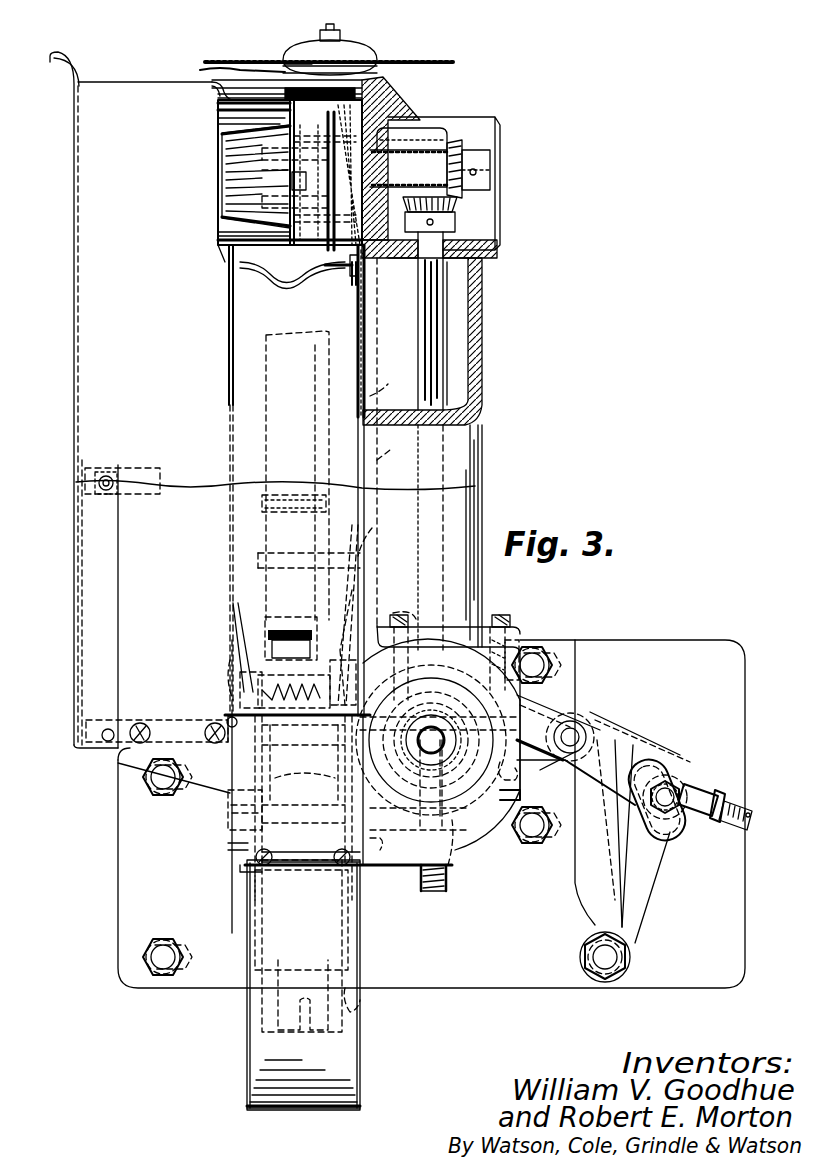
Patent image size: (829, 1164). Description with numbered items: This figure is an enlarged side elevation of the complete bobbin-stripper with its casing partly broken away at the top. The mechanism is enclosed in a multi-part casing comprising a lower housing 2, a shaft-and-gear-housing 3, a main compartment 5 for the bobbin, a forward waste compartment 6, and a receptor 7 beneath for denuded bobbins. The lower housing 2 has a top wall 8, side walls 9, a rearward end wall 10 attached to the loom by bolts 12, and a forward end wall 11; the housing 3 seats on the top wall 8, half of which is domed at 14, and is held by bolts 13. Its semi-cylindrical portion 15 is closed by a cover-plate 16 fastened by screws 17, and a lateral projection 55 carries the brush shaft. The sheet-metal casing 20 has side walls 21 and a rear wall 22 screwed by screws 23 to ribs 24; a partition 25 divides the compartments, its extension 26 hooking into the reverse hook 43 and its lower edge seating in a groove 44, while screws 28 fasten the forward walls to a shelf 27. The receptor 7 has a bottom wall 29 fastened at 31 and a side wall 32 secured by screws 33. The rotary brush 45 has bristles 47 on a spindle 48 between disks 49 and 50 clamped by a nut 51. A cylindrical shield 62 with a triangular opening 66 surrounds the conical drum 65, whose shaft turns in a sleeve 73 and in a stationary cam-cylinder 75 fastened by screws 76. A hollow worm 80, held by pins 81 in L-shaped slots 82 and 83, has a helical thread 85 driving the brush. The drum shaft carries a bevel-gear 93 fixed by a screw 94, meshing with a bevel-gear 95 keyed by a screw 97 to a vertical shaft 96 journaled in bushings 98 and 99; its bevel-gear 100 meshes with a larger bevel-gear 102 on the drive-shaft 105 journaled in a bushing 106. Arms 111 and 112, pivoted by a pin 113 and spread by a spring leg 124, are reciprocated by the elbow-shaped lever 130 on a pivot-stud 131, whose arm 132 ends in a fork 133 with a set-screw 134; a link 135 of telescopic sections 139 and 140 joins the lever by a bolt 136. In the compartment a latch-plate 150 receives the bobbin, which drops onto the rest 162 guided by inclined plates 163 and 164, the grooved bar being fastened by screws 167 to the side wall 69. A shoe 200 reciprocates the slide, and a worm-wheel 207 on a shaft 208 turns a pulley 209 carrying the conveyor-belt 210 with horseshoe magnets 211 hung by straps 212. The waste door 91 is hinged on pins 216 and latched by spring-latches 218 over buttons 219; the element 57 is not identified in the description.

The lower housing 2 is at (412, 866).
The shaft-and-gear-housing 3 is at (494, 446).
The main compartment 5 is at (232, 326).
The outer or forward compartment 6 is at (76, 336).
The receptor 7 is at (375, 1032).
The top wall 8 is at (460, 652).
The side walls 9 is at (228, 806).
The rearward end wall 10 is at (535, 978).
The forward end wall 11 is at (258, 830).
The bolts 12 is at (160, 795).
The bolts 13 is at (396, 606).
The domed portion 14 is at (528, 638).
The semi-cylindrical portion 15 is at (480, 374).
The cover-plate 16 is at (490, 160).
The screws 17 is at (497, 140).
The box-like casing 20 is at (64, 420).
The side walls 21 is at (180, 392).
The rear wall 22 is at (357, 314).
The screws 23 is at (350, 286).
The vertical ribs 24 is at (380, 398).
The vertical partition 25 is at (228, 382).
The extension 26 is at (216, 92).
The bracket-like shelf 27 is at (174, 718).
The screws 28 is at (135, 746).
The bottom wall 29 is at (298, 1110).
The fastening 31 is at (335, 857).
The side wall 32 is at (356, 1010).
The screws 33 is at (232, 848).
The reverse hook 43 is at (365, 86).
The groove 44 is at (226, 710).
The rotary brush 45 is at (410, 54).
The bristles 47 is at (445, 60).
The screw-threaded spindle 48 is at (318, 34).
The concavo-convex disk 49 is at (352, 58).
The concavo-convex disk 50 is at (378, 72).
The nut 51 is at (322, 62).
The lateral projection 55 is at (205, 70).
The wire 57 is at (290, 284).
The cylindrical guard or shield 62 is at (222, 258).
The conical drum or mandrel 65 is at (226, 186).
The triangularly-shaped opening 66 is at (270, 122).
The upright side wall 69 is at (405, 700).
The sleeve 73 is at (412, 160).
The stationary cam-cylinder 75 is at (392, 112).
The screws 76 is at (400, 134).
The hollow worm 80 is at (291, 252).
The pins 81 is at (292, 178).
The L-shaped slot 82 is at (296, 160).
The L-shaped slot 83 is at (292, 198).
The helical thread 85 is at (329, 252).
The cover or door 91 is at (88, 617).
The bevel-gear 93 is at (478, 174).
The screw 94 is at (466, 166).
The bevel-gear 95 is at (460, 206).
The vertical shaft 96 is at (422, 372).
The screw 97 is at (445, 224).
The bushing 98 is at (395, 260).
The bushing 99 is at (412, 608).
The bevel-gear 100 is at (448, 630).
The larger bevel-gear 102 is at (455, 790).
The horizontal drive-shaft 105 is at (413, 758).
The bushing 106 is at (418, 778).
The reciprocated arm 111 is at (538, 712).
The reciprocated arm 112 is at (548, 772).
The pivot-pin 113 is at (566, 737).
The straight leg 124 is at (578, 790).
The elbow-shaped lever 130 is at (640, 888).
The pivot-stud 131 is at (630, 950).
The upper angular arm 132 is at (653, 750).
The fork 133 is at (604, 722).
The set-screw 134 is at (598, 720).
The link 135 is at (738, 785).
The bolt 136 is at (676, 786).
The telescopic screw-threaded section 139 is at (704, 790).
The telescopic screw-threaded section 140 is at (742, 826).
The latch-plate or step 150 is at (300, 616).
The ledge or rest 162 is at (296, 762).
The inclined plate 163 is at (236, 656).
The inclined plate 164 is at (340, 650).
The screws 167 is at (352, 652).
The lenticular-shaped shoe 200 is at (372, 795).
The worm-wheel 207 is at (442, 892).
The shaft 208 is at (455, 865).
The pulley 209 is at (278, 810).
The conveyor-belt 210 is at (297, 475).
The permanent magnets 211 is at (300, 1030).
The straps 212 is at (301, 946).
The pins 216 is at (110, 728).
The spring-latches 218 is at (112, 478).
The buttons 219 is at (104, 494).